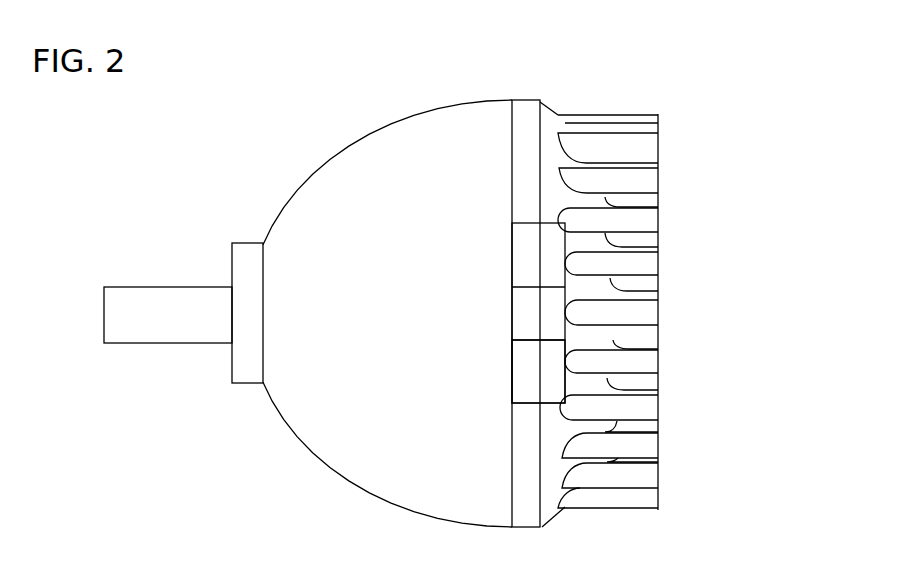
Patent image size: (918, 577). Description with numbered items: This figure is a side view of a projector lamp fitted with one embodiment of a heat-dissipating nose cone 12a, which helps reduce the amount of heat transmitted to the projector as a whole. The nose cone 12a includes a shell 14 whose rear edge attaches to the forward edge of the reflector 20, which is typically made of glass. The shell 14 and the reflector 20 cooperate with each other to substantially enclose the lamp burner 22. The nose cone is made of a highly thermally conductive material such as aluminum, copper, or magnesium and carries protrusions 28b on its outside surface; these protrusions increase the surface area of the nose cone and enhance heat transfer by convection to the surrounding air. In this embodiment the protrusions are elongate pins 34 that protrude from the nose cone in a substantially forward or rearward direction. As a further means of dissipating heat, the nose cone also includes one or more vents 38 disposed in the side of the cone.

The heat-dissipating nose cone 12a is at (528, 84).
The shell 14 is at (557, 108).
The reflector 20 is at (358, 200).
The lamp burner 22 is at (155, 310).
The protrusions on the outside surface 28b is at (687, 320).
The elongate pins 34 is at (640, 413).
The vents 38 is at (547, 360).